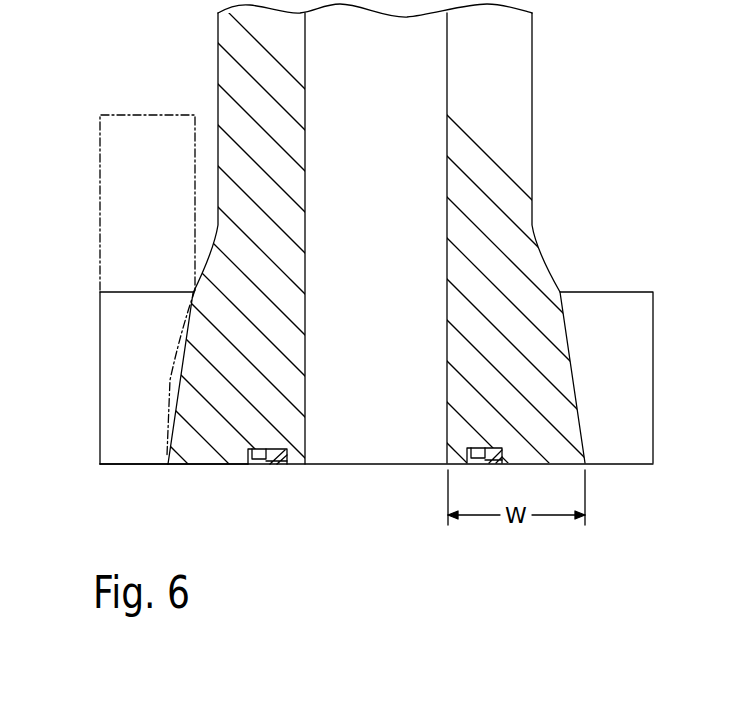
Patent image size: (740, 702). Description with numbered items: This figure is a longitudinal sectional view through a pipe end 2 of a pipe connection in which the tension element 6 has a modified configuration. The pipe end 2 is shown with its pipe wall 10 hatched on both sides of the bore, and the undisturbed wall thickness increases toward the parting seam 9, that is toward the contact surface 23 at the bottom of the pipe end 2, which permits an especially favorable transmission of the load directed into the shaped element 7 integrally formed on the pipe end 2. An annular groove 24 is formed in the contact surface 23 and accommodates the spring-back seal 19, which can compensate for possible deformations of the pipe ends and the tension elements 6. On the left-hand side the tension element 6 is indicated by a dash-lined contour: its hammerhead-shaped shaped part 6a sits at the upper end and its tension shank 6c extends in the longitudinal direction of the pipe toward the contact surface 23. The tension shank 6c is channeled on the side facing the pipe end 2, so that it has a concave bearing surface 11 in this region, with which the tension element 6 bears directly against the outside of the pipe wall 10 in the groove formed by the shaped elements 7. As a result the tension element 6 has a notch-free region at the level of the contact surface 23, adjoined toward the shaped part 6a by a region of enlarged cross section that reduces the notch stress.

The pipe end 2 is at (532, 140).
The pipe wall 10 is at (492, 83).
The tension element 6 is at (100, 437).
The shaped part 6a is at (125, 203).
The tension shank 6c is at (125, 330).
The bearing surface 11 is at (168, 392).
The shaped element 7 is at (635, 370).
The parting seam 9 is at (635, 463).
The spring-back seal 19 is at (490, 465).
The contact surface 23 is at (203, 466).
The annular groove 24 is at (243, 466).